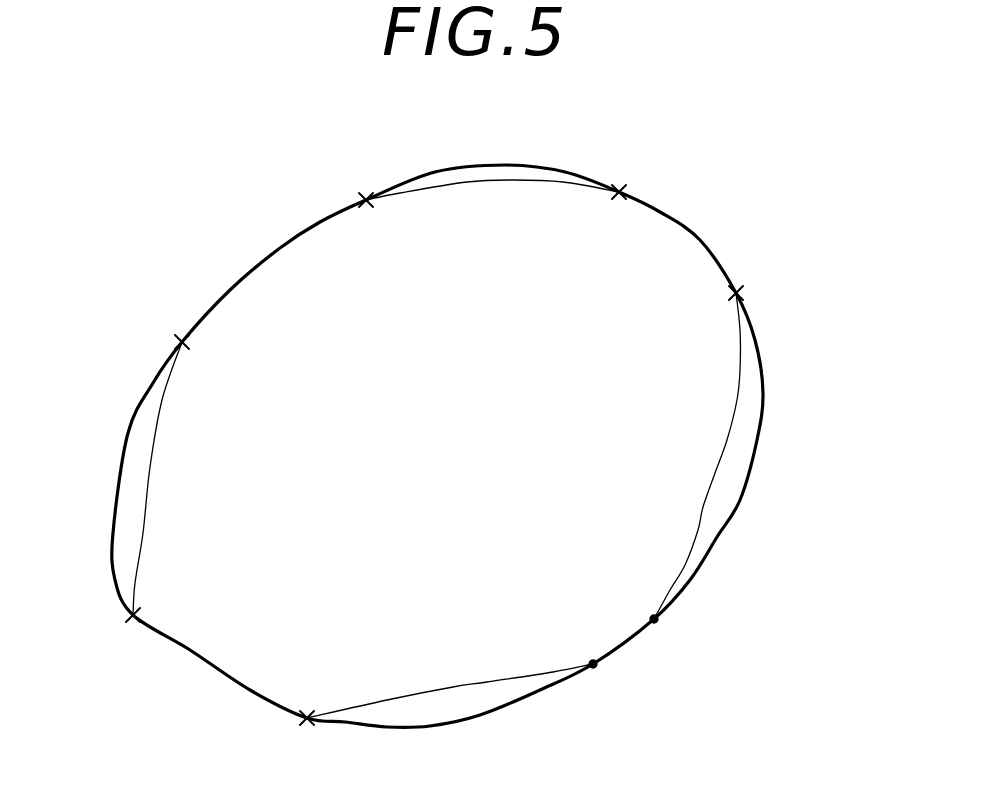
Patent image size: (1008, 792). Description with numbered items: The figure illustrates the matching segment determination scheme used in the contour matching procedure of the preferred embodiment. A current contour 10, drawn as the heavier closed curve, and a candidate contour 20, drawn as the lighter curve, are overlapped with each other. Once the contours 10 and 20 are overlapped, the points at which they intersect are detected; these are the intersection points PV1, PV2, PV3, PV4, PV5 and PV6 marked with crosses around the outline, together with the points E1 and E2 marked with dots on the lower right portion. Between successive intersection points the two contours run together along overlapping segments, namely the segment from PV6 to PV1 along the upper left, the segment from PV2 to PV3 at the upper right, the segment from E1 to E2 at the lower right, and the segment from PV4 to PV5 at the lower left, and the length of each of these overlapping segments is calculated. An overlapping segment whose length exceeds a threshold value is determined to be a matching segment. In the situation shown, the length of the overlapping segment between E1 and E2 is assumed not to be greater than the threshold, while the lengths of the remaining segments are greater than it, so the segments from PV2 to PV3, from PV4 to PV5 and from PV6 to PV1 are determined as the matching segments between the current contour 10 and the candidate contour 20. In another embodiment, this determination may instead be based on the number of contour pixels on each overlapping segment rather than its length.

The current contour 10 is at (757, 440).
The candidate contour 20 is at (698, 530).
The intersection point PV1 is at (343, 177).
The intersection point PV2 is at (642, 170).
The intersection point PV3 is at (774, 287).
The intersection point PV4 is at (305, 741).
The intersection point PV5 is at (96, 622).
The intersection point PV6 is at (147, 327).
The intersection point E1 is at (678, 636).
The intersection point E2 is at (606, 686).